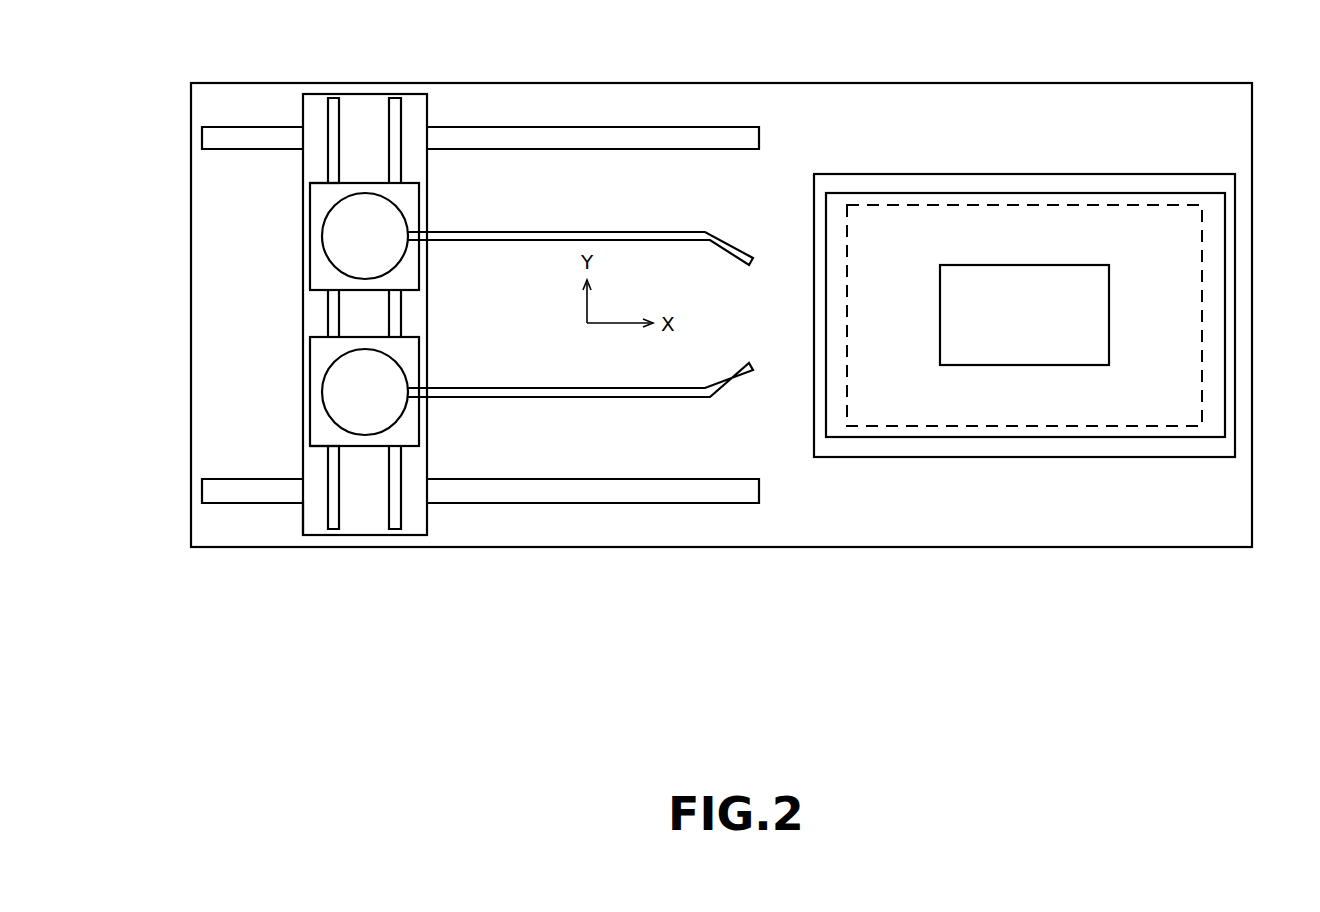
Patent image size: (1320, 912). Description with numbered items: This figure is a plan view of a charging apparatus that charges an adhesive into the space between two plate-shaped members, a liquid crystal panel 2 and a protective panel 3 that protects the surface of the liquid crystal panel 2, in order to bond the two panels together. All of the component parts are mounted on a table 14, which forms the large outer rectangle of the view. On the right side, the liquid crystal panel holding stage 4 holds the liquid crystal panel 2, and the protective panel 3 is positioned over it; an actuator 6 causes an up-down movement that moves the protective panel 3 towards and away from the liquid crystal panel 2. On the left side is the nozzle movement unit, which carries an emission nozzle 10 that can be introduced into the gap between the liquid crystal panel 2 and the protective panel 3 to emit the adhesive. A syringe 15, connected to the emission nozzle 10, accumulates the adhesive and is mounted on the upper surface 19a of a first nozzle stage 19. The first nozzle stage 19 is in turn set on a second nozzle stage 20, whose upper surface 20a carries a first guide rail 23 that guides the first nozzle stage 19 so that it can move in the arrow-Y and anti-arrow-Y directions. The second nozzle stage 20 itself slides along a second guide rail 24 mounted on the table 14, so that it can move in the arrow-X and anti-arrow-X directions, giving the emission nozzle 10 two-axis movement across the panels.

The liquid crystal panel 2 is at (1202, 337).
The protective panel 3 is at (1225, 372).
The liquid crystal panel holding stage 4 is at (1235, 413).
The actuator 6 is at (1109, 292).
The emission nozzle 10 is at (560, 232).
The table 14 is at (1014, 547).
The syringe 15 is at (360, 236).
The first nozzle stage 19 is at (305, 218).
The upper surface 19a is at (318, 198).
The second nozzle stage 20 is at (365, 522).
The upper surface 20a is at (315, 521).
The first guide rail 23 is at (332, 525).
The second guide rail 24 is at (656, 127).